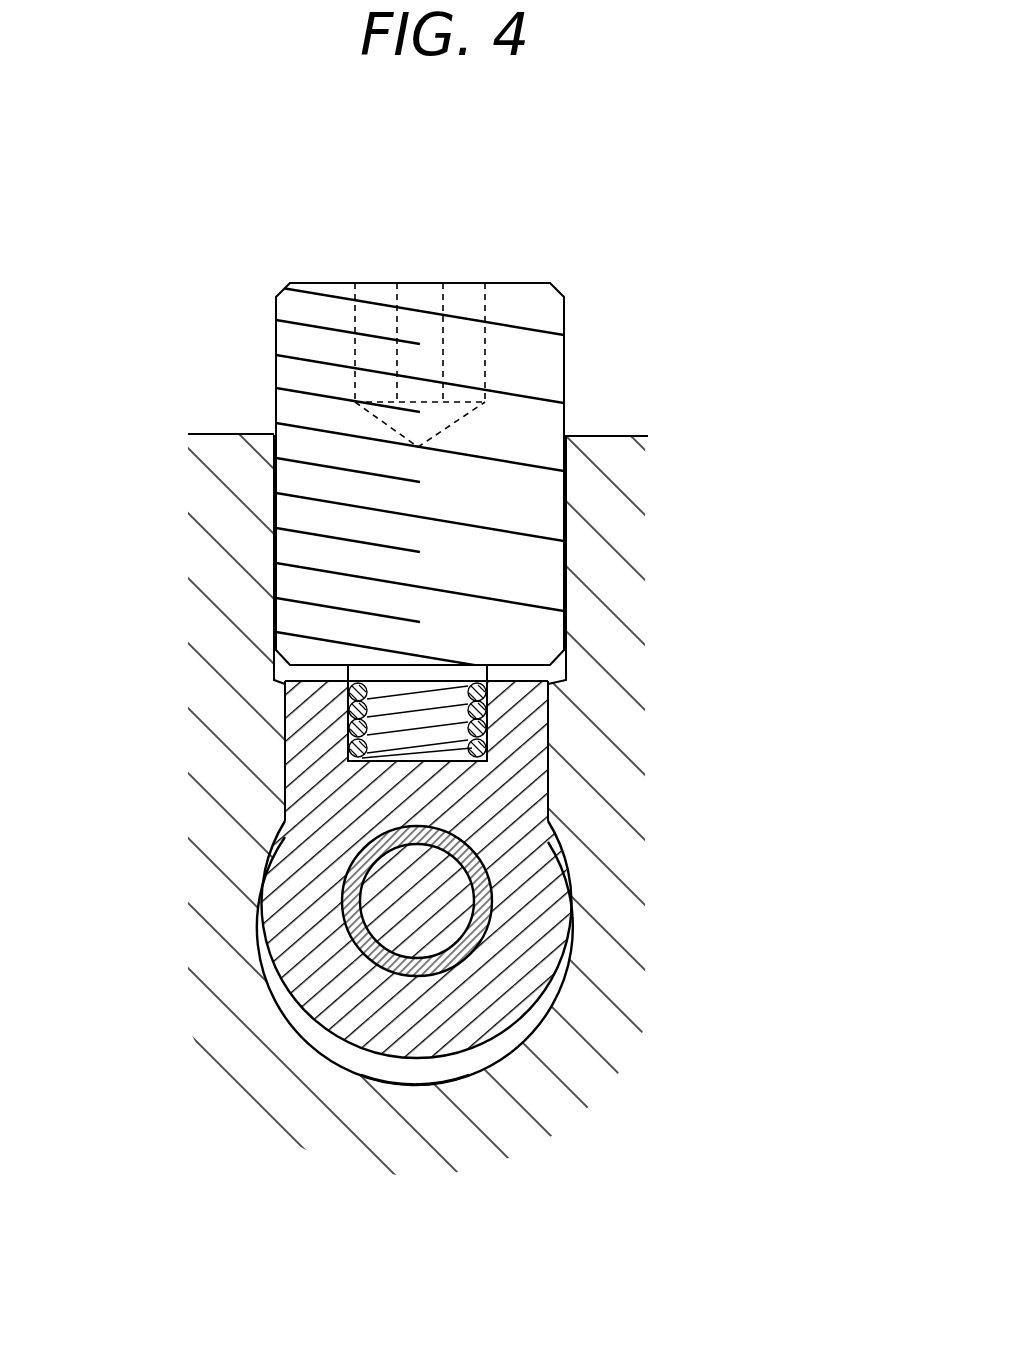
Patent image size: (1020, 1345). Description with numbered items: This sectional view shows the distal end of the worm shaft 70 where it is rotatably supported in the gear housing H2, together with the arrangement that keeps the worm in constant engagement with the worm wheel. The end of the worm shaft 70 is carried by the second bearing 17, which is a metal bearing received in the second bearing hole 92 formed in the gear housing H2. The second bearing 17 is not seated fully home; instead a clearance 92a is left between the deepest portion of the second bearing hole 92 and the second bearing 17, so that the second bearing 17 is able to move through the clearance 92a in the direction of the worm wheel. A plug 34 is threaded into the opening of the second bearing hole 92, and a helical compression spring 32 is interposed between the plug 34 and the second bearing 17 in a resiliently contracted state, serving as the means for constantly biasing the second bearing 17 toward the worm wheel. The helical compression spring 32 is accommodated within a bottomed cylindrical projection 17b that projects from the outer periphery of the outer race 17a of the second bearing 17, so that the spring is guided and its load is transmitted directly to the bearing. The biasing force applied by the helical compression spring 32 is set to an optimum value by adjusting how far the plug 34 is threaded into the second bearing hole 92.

The plug 34 is at (518, 312).
The gear housing H2 is at (607, 452).
The helical compression spring 32 is at (380, 722).
The bottomed cylindrical projection 17b is at (520, 757).
The second bearing hole 92 is at (262, 857).
The outer race 17a is at (533, 900).
The worm shaft 70 is at (345, 968).
The second bearing 17 is at (519, 987).
The clearance 92a is at (398, 1076).